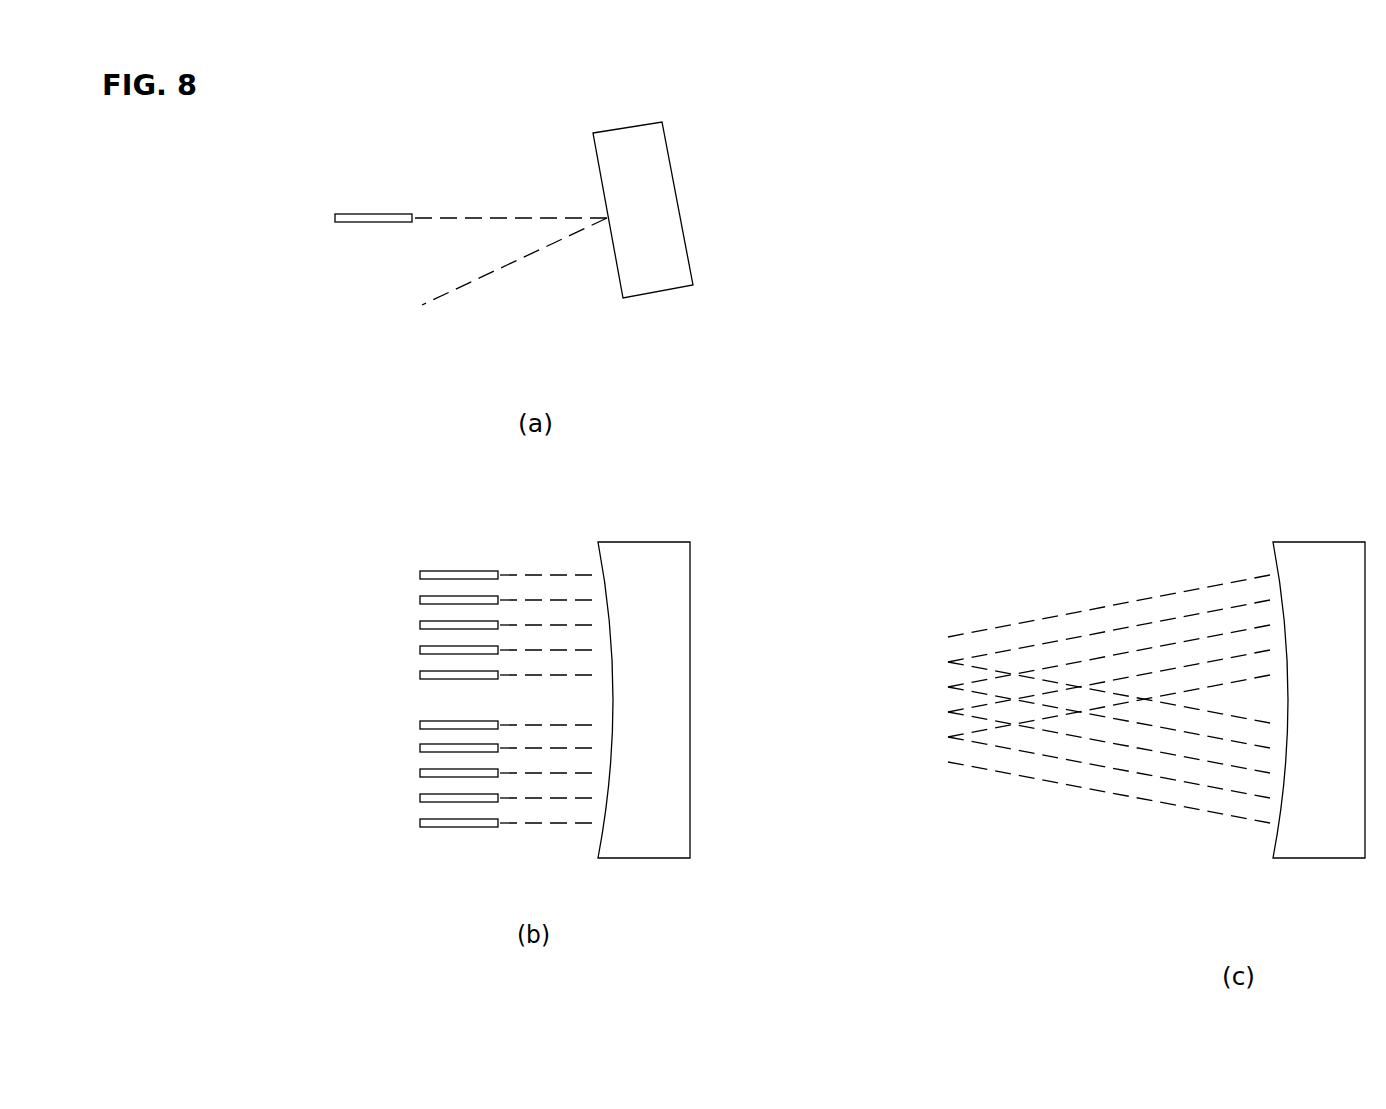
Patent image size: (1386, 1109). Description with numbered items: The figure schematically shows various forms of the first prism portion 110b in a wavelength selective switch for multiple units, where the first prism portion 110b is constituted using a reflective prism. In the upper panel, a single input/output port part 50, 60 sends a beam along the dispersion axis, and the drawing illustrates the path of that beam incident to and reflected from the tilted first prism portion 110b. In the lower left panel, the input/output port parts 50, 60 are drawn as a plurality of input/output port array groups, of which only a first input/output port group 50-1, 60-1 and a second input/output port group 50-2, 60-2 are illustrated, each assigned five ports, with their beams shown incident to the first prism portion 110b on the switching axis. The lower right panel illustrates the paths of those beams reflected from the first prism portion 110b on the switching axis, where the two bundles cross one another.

The input/output port part 50 is at (410, 256).
The input/output port part 60 is at (410, 256).
The first prism portion 110b is at (656, 273).
The first input/output port group 50-1 is at (395, 625).
The first input/output port group 60-1 is at (395, 625).
The second input/output port group 50-2 is at (395, 774).
The second input/output port group 60-2 is at (395, 774).